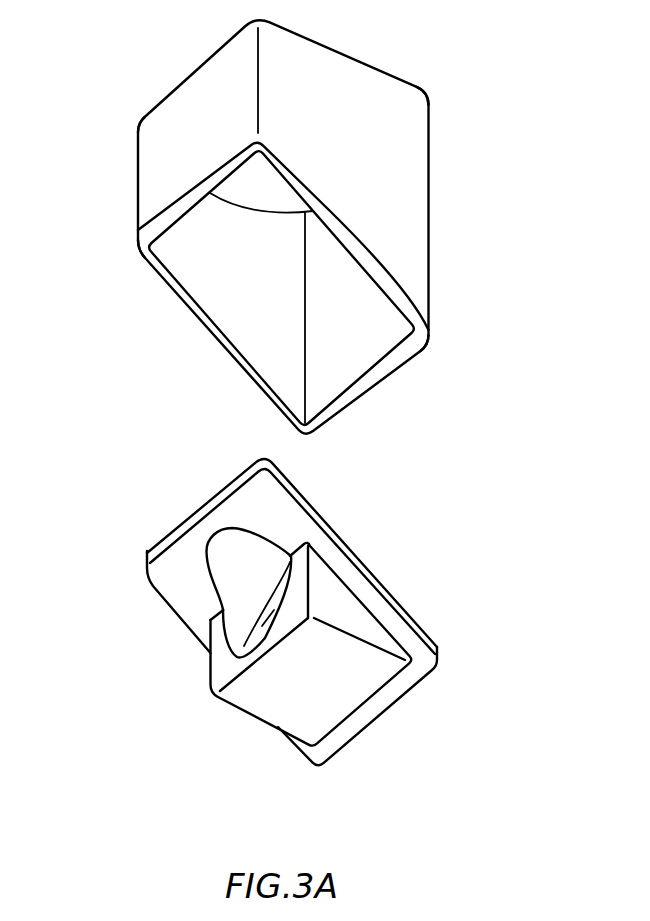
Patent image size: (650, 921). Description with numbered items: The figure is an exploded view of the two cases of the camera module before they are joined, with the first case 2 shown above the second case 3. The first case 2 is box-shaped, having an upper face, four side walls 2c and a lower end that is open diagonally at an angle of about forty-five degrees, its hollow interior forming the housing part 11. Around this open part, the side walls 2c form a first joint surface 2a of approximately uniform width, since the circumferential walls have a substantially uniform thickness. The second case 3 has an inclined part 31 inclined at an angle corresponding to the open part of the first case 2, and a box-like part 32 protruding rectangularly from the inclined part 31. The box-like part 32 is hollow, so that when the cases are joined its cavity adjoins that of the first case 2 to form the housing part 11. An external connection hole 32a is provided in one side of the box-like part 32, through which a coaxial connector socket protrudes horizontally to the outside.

The first case 2 is at (107, 158).
The first joint surface 2a is at (362, 393).
The side walls 2c is at (168, 163).
The housing part 11 is at (272, 253).
The second case 3 is at (128, 508).
The inclined part 31 is at (192, 575).
The box-like part 32 is at (303, 677).
The external connection hole 32a is at (210, 665).